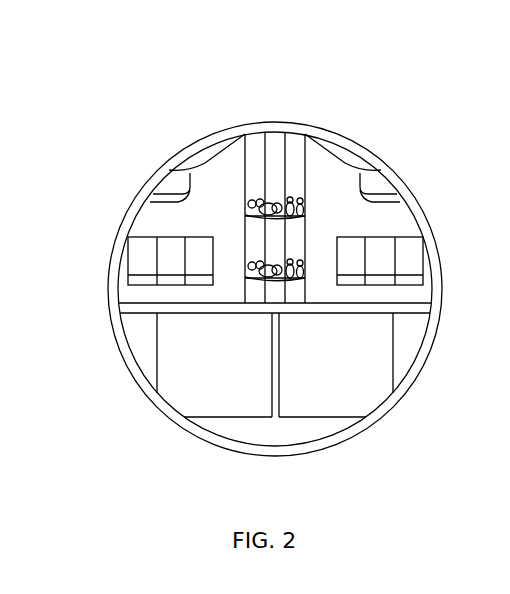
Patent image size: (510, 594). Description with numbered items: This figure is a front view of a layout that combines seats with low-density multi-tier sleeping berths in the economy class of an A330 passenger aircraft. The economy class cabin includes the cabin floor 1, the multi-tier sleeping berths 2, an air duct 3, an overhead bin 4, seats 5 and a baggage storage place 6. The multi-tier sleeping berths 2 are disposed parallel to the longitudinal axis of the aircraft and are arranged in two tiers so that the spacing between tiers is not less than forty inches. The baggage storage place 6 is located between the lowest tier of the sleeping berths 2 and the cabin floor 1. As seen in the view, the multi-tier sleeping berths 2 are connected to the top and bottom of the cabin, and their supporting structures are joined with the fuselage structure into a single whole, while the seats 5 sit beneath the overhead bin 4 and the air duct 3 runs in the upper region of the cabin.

The cabin floor 1 is at (147, 303).
The multi-tier sleeping berths 2 is at (260, 145).
The air duct 3 is at (340, 150).
The overhead bin 4 is at (173, 185).
The seats 5 is at (145, 265).
The baggage storage place 6 is at (268, 291).